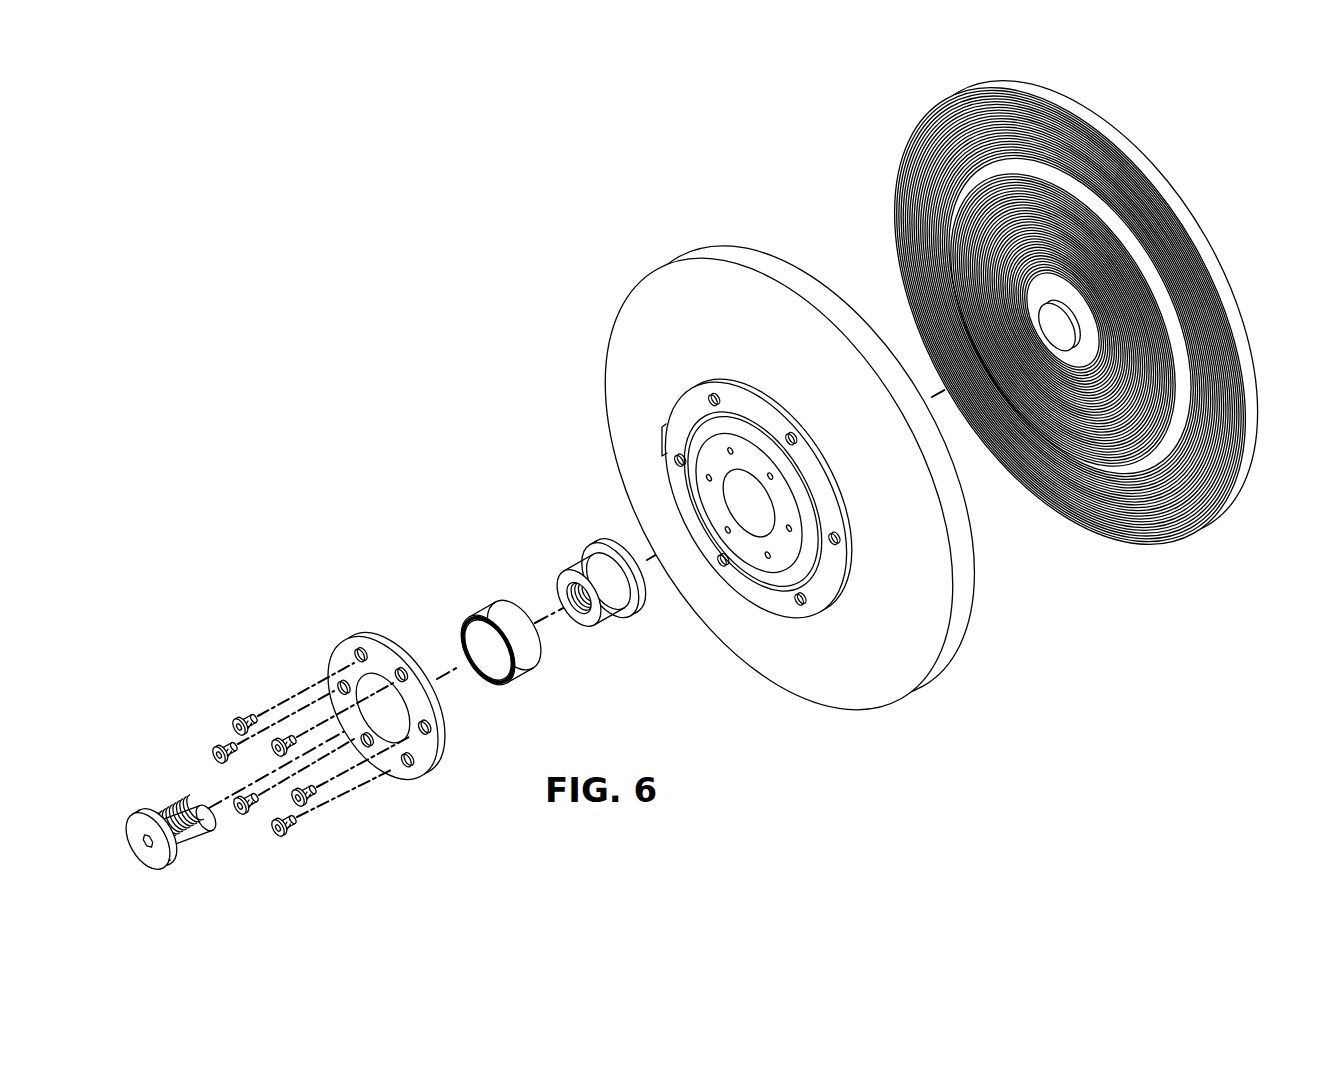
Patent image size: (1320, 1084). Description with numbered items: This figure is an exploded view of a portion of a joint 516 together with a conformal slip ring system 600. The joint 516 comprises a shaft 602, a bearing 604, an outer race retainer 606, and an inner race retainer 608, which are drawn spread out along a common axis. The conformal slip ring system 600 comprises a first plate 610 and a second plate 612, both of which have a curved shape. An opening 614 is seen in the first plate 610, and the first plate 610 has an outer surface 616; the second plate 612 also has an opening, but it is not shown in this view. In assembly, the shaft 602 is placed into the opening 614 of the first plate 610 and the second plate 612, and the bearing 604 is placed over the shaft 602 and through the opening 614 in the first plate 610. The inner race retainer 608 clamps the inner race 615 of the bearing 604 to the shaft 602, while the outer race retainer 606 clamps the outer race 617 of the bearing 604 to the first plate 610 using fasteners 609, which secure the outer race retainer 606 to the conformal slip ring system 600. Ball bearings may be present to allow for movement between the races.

The conformal slip ring system 600 is at (750, 158).
The joint 516 is at (468, 506).
The second plate 612 is at (1113, 130).
The first plate 610 is at (834, 290).
The outer surface 616 is at (752, 550).
The opening 614 is at (752, 487).
The shaft 602 is at (576, 567).
The bearing 604 is at (463, 658).
The outer race 617 is at (457, 634).
The inner race 615 is at (490, 686).
The outer race retainer 606 is at (348, 641).
The fasteners 609 is at (220, 706).
The inner race retainer 608 is at (171, 811).